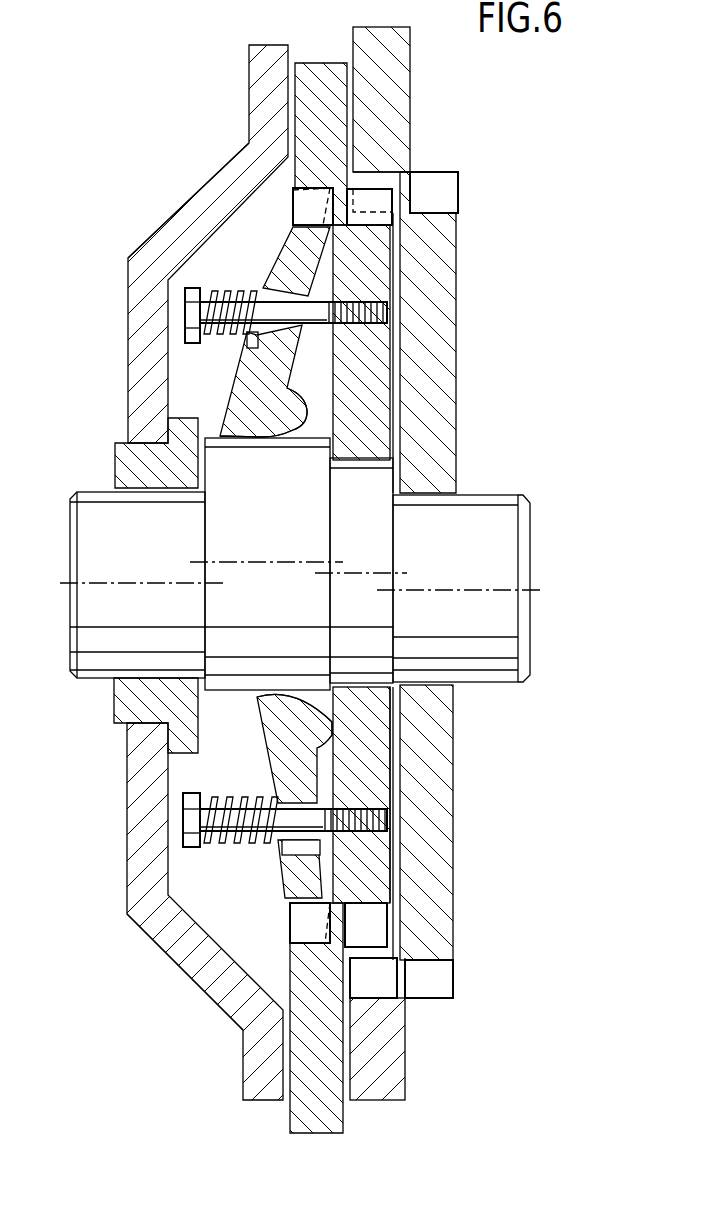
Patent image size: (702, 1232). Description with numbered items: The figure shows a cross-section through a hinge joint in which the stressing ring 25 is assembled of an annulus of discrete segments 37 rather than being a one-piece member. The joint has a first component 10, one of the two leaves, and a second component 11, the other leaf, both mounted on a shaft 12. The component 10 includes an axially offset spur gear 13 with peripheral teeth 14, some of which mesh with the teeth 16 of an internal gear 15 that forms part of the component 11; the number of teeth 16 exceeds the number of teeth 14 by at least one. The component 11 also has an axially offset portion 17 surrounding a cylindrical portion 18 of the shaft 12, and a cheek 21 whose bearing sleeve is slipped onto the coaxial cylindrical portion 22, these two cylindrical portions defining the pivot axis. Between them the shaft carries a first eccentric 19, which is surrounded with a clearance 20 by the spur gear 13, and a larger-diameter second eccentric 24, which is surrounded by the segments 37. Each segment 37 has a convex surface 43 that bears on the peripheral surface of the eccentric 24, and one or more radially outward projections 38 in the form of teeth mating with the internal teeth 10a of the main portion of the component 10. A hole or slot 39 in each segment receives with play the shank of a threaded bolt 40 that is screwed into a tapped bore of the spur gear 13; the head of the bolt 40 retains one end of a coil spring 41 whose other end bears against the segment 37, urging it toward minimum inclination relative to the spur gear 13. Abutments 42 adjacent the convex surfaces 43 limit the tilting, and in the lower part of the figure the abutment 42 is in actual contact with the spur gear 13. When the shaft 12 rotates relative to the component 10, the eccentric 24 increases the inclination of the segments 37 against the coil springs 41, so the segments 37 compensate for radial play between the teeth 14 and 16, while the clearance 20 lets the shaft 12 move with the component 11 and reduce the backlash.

The first component 10 is at (318, 118).
The internal teeth 10a is at (300, 925).
The second component 11 is at (395, 135).
The shaft 12 is at (532, 558).
The spur gear 13 is at (370, 372).
The peripheral teeth 14 is at (372, 928).
The internal gear 15 is at (388, 1008).
The teeth 16 is at (378, 980).
The axially offset portion 17 is at (435, 266).
The cylindrical portion 18 is at (472, 553).
The first eccentric 19 is at (372, 553).
The clearance 20 is at (412, 688).
The cheek 21 is at (150, 395).
The cylindrical portion 22 is at (146, 553).
The second eccentric 24 is at (276, 553).
The ring 25 is at (268, 238).
The segment 37 is at (247, 373).
The projection 38 is at (290, 222).
The hole or slot 39 is at (283, 288).
The fastener 40 is at (307, 310).
The coil spring 41 is at (263, 298).
The abutment 42 is at (302, 410).
The convex surface 43 is at (296, 428).